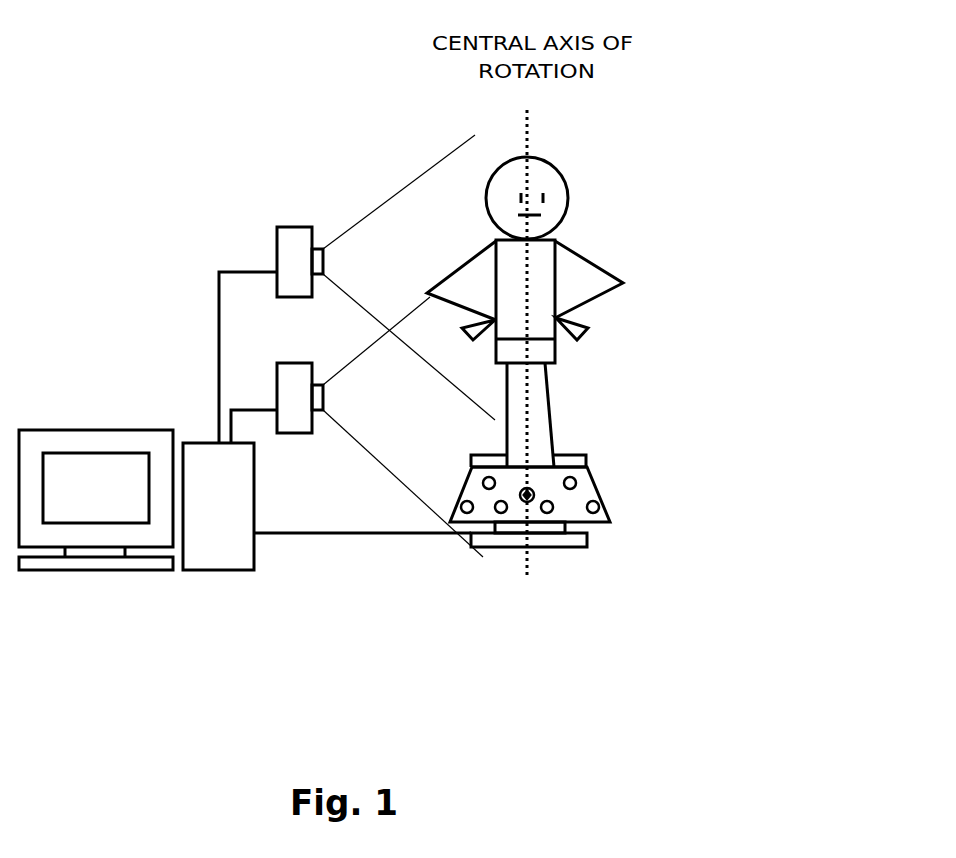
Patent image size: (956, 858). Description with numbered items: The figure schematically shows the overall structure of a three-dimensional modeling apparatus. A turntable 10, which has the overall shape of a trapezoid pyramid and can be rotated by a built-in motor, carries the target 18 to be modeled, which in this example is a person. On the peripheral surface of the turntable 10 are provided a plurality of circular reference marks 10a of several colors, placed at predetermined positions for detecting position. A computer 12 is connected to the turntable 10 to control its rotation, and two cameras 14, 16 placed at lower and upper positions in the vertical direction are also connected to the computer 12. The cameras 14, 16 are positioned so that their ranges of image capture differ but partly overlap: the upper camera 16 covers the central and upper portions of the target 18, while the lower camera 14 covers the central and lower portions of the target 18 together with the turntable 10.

The turntable 10 is at (600, 489).
The reference marks 10a is at (594, 513).
The computer 12 is at (163, 588).
The camera 14 is at (277, 399).
The camera 16 is at (277, 263).
The target 18 is at (588, 218).